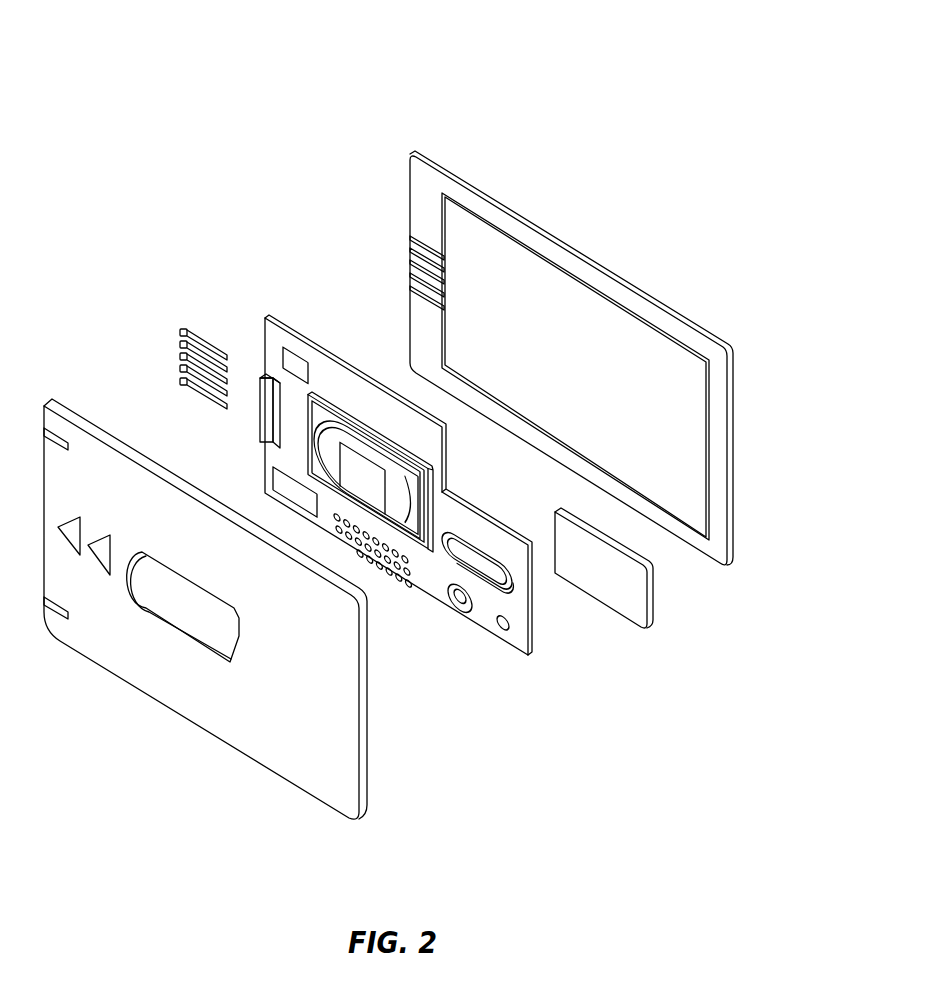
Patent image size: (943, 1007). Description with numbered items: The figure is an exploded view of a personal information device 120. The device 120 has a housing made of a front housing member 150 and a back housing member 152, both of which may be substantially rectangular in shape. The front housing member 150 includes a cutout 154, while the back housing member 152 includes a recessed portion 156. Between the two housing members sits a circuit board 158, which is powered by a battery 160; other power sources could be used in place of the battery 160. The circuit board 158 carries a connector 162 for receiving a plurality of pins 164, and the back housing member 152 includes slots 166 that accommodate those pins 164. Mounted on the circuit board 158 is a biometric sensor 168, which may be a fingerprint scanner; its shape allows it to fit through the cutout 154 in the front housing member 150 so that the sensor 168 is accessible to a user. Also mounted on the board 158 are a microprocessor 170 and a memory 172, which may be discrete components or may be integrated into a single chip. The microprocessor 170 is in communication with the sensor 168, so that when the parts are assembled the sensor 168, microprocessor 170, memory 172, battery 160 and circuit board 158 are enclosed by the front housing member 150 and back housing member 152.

The personal information device 120 is at (165, 86).
The front housing member 150 is at (373, 717).
The back housing member 152 is at (746, 435).
The cutout 154 is at (165, 621).
The recessed portion 156 is at (599, 326).
The circuit board 158 is at (540, 623).
The battery 160 is at (662, 602).
The connector 162 is at (263, 393).
The pins 164 is at (171, 316).
The slots 166 is at (410, 248).
The biometric sensor 168 is at (347, 410).
The microprocessor 170 is at (274, 486).
The memory 172 is at (293, 367).